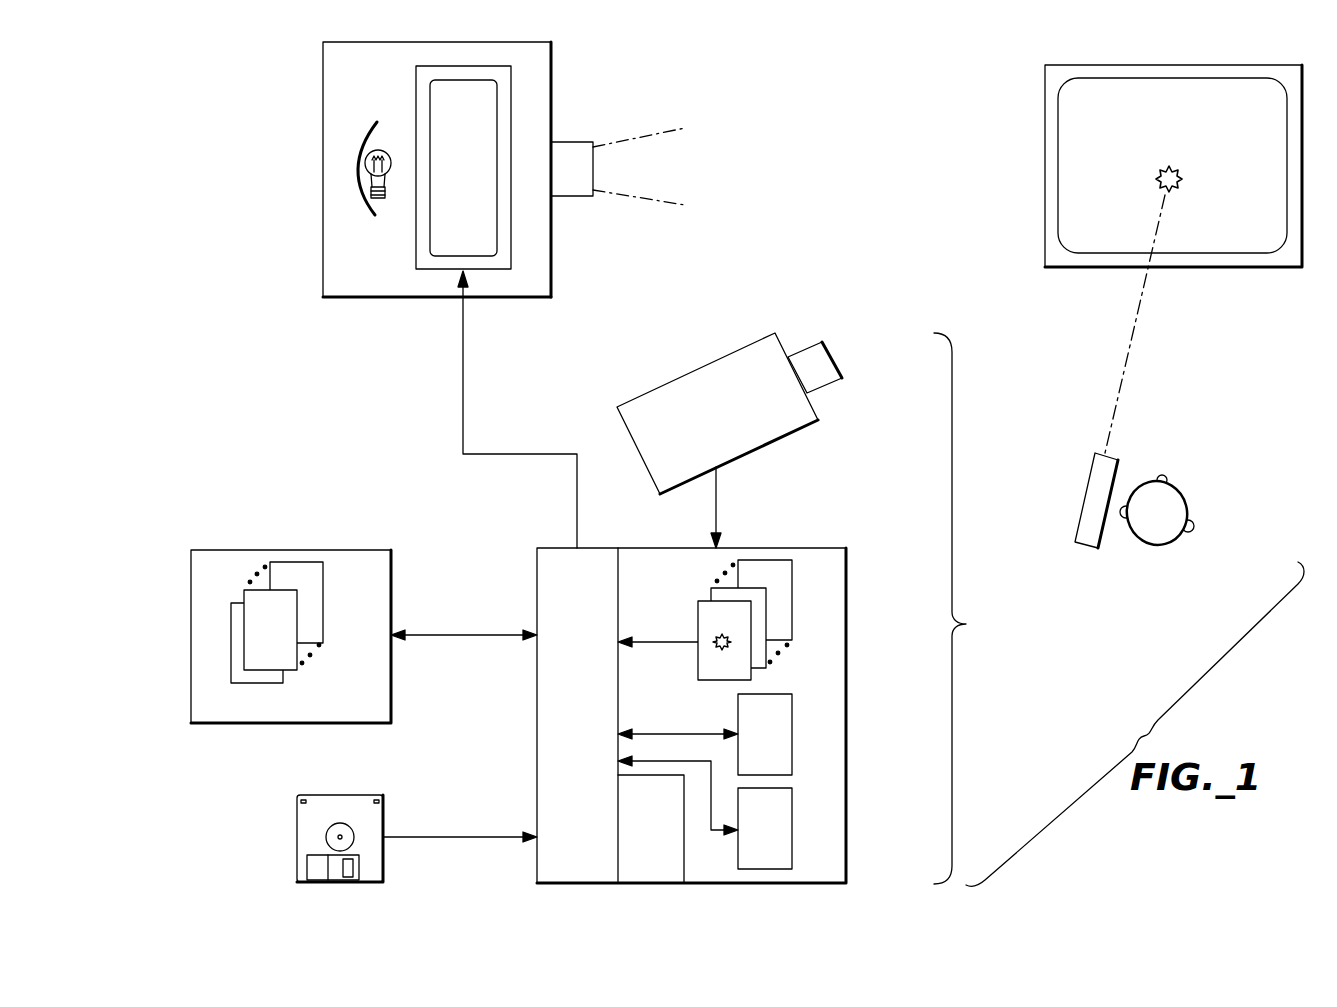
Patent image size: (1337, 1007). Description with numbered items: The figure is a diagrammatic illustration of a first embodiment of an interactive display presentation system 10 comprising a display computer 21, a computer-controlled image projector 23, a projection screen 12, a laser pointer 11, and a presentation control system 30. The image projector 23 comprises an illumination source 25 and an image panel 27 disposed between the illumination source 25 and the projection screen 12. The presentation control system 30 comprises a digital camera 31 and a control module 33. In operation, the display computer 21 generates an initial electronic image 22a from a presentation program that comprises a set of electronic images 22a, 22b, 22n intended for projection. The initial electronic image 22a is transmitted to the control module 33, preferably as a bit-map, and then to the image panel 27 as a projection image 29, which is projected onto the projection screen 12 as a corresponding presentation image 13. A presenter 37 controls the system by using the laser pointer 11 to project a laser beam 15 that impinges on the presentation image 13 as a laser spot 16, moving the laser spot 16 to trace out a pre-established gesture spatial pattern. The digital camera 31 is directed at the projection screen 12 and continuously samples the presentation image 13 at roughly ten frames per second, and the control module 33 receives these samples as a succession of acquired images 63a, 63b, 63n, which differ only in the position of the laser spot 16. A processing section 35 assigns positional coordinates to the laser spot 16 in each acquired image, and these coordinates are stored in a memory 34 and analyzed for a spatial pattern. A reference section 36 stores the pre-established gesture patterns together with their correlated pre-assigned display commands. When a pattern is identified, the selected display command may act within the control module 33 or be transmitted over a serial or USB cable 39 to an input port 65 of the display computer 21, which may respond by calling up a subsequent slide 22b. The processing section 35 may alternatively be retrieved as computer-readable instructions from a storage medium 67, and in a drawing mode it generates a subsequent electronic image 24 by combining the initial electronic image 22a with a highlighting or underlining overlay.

The interactive display presentation system 10 is at (788, 70).
The laser pointer 11 is at (1097, 482).
The projection screen 12 is at (1100, 65).
The presentation image 13 is at (1187, 90).
The laser beam 15 is at (1128, 365).
The laser spot 16 is at (1181, 185).
The display computer 21 is at (375, 548).
The initial electronic image 22a is at (792, 712).
The subsequent slide 22b is at (244, 600).
The electronic image 22n is at (290, 562).
The computer-controlled image projector 23 is at (323, 55).
The subsequent electronic image 24 is at (792, 815).
The illumination source 25 is at (347, 173).
The image panel 27 is at (490, 270).
The projection image 29 is at (488, 102).
The presentation control system 30 is at (969, 608).
The digital camera 31 is at (743, 347).
The control module 33 is at (787, 547).
The memory 34 is at (827, 838).
The processing section 35 is at (543, 742).
The reference section 36 is at (634, 852).
The presenter 37 is at (1172, 500).
The serial or USB cable 39 is at (443, 634).
The acquired image 63a is at (751, 675).
The acquired image 63b is at (766, 615).
The acquired image 63n is at (792, 580).
The input port 65 is at (393, 640).
The storage medium 67 is at (297, 832).